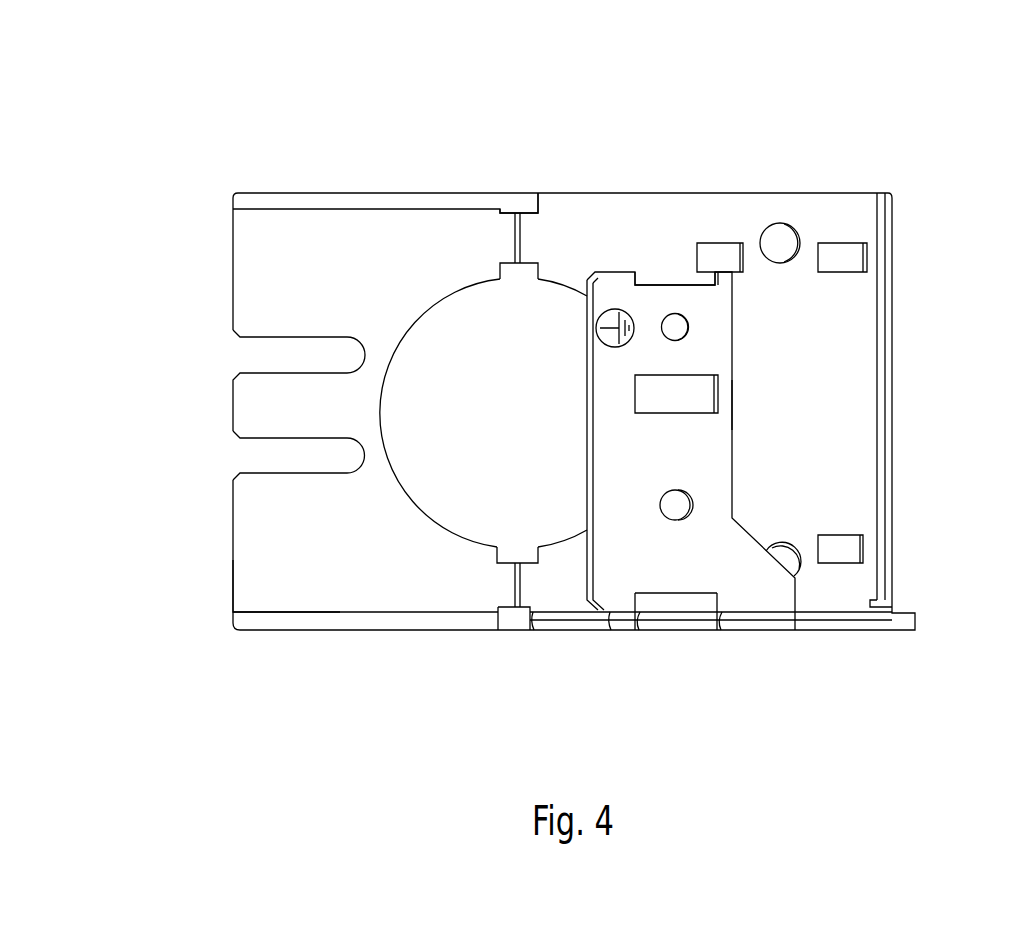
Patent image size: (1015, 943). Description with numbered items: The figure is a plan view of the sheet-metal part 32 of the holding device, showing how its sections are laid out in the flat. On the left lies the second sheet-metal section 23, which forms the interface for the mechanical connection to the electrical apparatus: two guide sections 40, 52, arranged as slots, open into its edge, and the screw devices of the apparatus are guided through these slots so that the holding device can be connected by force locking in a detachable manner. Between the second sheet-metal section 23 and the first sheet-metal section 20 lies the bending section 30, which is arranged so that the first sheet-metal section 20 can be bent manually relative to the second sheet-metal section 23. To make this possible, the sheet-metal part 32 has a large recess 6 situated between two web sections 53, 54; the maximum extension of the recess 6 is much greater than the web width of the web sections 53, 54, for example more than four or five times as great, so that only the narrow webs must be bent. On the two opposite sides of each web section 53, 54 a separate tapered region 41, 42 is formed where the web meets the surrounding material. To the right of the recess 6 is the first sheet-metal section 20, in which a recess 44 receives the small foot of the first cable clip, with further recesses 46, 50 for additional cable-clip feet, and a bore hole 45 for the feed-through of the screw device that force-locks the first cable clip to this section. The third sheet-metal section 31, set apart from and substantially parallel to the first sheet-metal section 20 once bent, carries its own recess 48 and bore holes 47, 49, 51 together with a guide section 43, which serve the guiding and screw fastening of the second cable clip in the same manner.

The sheet-metal part 32 is at (237, 150).
The recess 6 is at (418, 305).
The tapered region 41 is at (497, 270).
The tapered region 42 is at (504, 206).
The web section 54 is at (522, 212).
The bending section 30 is at (524, 243).
The guide section 43 is at (645, 282).
The recess 44 is at (723, 240).
The bore hole 45 is at (794, 222).
The recess 46 is at (849, 240).
The bore hole 47 is at (700, 326).
The recess 48 is at (723, 378).
The first sheet-metal section 20 is at (817, 404).
The bore hole 49 is at (698, 495).
The recess 50 is at (869, 545).
The bore hole 51 is at (804, 574).
The third sheet-metal section 31 is at (622, 558).
The web section 53 is at (509, 616).
The second sheet-metal section 23 is at (333, 558).
The guide section 52 is at (270, 474).
The guide section 40 is at (268, 337).